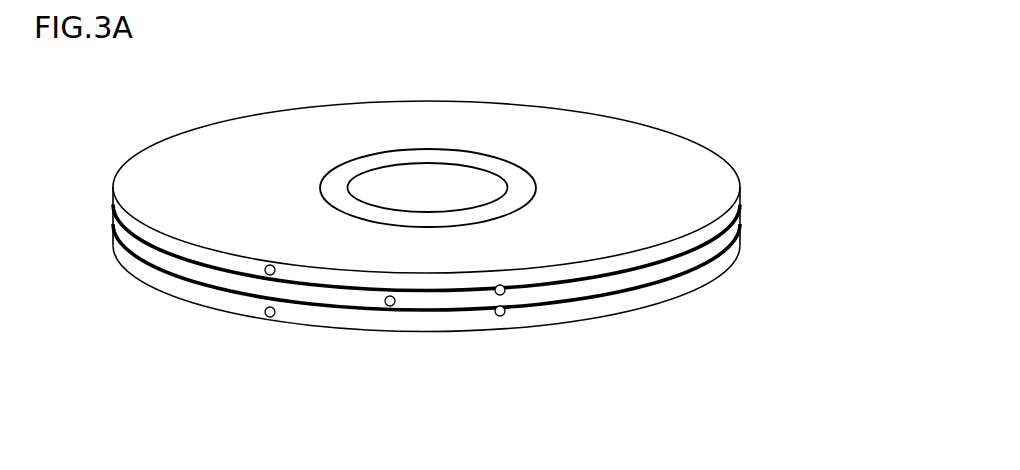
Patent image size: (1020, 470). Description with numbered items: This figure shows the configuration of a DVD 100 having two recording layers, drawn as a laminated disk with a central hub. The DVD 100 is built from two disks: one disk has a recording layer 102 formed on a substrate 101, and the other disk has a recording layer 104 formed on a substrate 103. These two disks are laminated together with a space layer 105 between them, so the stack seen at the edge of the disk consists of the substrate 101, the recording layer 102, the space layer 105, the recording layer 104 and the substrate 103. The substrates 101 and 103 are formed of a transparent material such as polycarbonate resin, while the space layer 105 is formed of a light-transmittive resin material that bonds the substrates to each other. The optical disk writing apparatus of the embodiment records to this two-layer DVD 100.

The DVD 100 is at (744, 168).
The substrate 101 is at (266, 274).
The recording layer 102 is at (505, 292).
The substrate 103 is at (274, 317).
The recording layer 104 is at (503, 316).
The space layer 105 is at (393, 306).